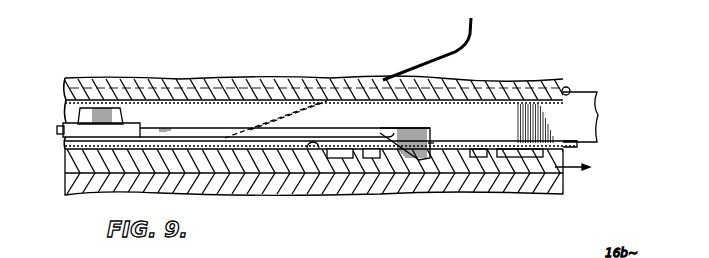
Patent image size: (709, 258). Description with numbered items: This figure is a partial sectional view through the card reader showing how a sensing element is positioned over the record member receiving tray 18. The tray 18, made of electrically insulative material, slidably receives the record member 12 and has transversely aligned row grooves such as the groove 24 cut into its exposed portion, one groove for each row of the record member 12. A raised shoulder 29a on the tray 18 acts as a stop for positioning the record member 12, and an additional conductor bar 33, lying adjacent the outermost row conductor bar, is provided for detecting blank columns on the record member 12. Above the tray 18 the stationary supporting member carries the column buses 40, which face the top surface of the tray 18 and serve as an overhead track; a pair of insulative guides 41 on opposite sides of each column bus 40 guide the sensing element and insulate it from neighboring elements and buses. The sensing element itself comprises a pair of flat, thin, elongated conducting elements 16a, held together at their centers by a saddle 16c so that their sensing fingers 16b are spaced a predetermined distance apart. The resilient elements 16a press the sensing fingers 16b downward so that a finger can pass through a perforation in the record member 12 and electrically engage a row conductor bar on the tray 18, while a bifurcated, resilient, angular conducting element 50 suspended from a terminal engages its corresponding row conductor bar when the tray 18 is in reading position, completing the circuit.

The electrical conducting element 16a is at (181, 120).
The sensing finger 16b is at (417, 128).
The saddle 16c is at (112, 128).
The conductor bar 33 is at (235, 138).
The conducting element 50 is at (453, 54).
The groove 24 is at (430, 143).
The record member 12 is at (577, 150).
The record member receiving tray 18 is at (510, 183).
The raised shoulder 29a is at (313, 148).
The column bus 40 is at (568, 104).
The insulative guide 41 is at (599, 113).